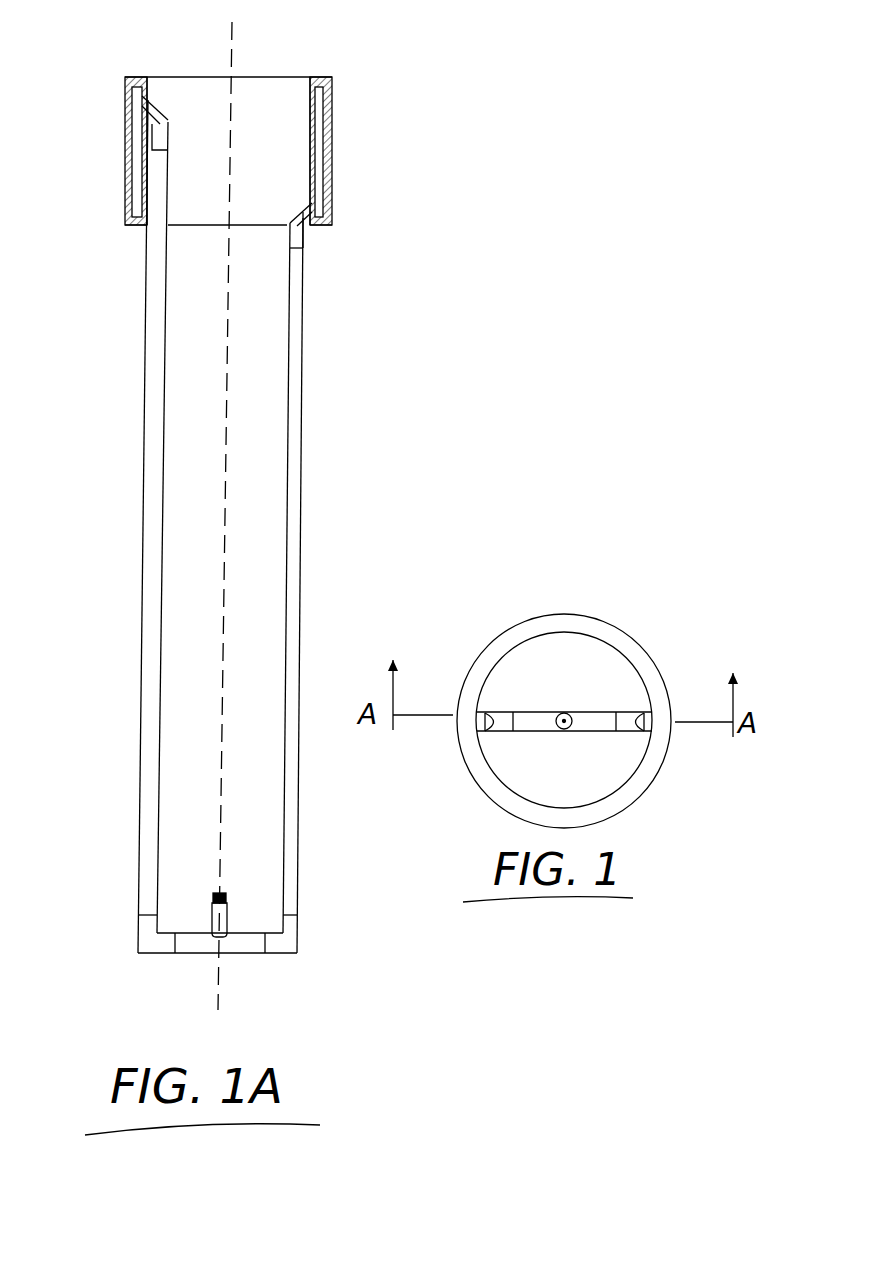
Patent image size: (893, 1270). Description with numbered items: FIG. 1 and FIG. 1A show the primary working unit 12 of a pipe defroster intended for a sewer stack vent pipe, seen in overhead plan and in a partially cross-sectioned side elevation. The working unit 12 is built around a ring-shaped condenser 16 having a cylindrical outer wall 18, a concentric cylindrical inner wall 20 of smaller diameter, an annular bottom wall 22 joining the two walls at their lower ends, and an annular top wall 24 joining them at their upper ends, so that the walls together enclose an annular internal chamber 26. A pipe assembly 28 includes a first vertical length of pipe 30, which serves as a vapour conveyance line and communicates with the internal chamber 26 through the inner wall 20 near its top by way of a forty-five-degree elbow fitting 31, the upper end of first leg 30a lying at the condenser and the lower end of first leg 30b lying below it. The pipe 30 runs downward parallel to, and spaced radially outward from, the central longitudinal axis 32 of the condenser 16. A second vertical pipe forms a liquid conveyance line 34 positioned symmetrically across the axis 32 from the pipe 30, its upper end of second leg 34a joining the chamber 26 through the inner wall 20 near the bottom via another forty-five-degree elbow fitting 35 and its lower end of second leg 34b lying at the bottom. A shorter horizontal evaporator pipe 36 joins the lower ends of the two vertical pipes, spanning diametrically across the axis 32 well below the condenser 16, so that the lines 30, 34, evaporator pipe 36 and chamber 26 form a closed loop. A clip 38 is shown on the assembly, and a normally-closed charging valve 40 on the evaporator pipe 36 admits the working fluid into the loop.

In FIG. 1A, the primary working unit 12 is at (443, 140).
In FIG. 1, the primary working unit 12 is at (497, 627).
In FIG. 1A, the ring-shaped condenser 16 is at (231, 157).
In FIG. 1, the ring-shaped condenser 16 is at (588, 708).
In FIG. 1A, the cylindrical outer wall 18 is at (333, 163).
In FIG. 1A, the cylindrical inner wall 20 is at (310, 122).
In FIG. 1A, the annular bottom wall 22 is at (318, 232).
In FIG. 1A, the annular top wall 24 is at (327, 78).
In FIG. 1, the annular top wall 24 is at (595, 628).
In FIG. 1A, the annular internal chamber 26 is at (319, 152).
In FIG. 1A, the pipe assembly 28 is at (213, 550).
In FIG. 1, the pipe assembly 28 is at (570, 731).
In FIG. 1A, the first vertical length of pipe 30 is at (140, 521).
In FIG. 1, the upper end of first leg 30a is at (485, 723).
In FIG. 1A, the lower end of first leg 30b is at (136, 935).
In FIG. 1A, the 45-degree elbow fitting 31 is at (165, 125).
In FIG. 1A, the central longitudinal axis 32 is at (238, 37).
In FIG. 1A, the liquid conveyance line 34 is at (305, 571).
In FIG. 1, the upper end of second leg 34a is at (643, 733).
In FIG. 1A, the lower end of second leg 34b is at (313, 930).
In FIG. 1A, the 45-degree elbow fitting 35 is at (303, 210).
In FIG. 1A, the evaporator pipe 36 is at (190, 948).
In FIG. 1, the evaporator pipe 36 is at (530, 716).
In FIG. 1, the clip 38 is at (507, 714).
In FIG. 1A, the charging valve 40 is at (223, 928).
In FIG. 1, the charging valve 40 is at (569, 714).